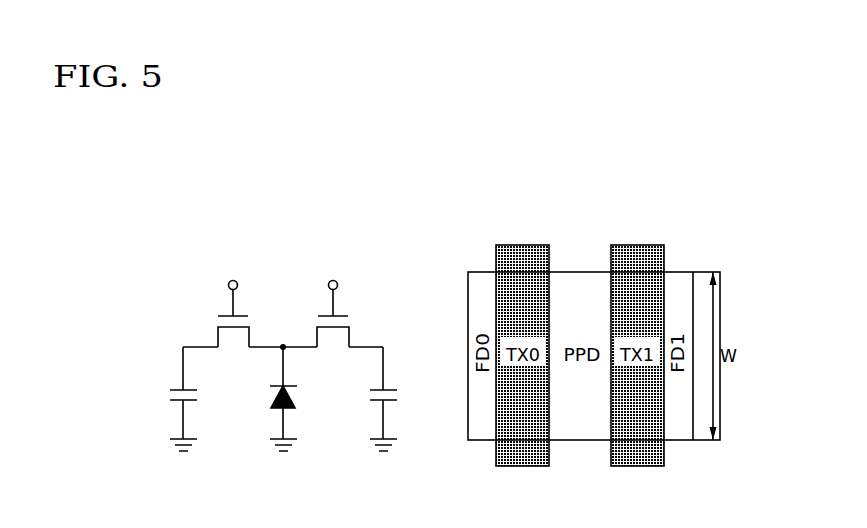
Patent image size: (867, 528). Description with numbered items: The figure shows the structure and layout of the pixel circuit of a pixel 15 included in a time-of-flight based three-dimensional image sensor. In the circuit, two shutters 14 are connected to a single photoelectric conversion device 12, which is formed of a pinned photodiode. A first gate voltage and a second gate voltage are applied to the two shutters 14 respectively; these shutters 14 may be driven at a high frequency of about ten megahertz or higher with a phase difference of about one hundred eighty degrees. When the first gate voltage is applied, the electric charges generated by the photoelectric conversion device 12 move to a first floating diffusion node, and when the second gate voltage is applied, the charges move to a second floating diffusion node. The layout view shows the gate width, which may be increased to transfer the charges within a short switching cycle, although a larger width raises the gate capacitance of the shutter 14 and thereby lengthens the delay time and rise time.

The pixel 15 is at (280, 227).
The shutter 14 is at (227, 315).
The photoelectric conversion device 12 is at (276, 398).